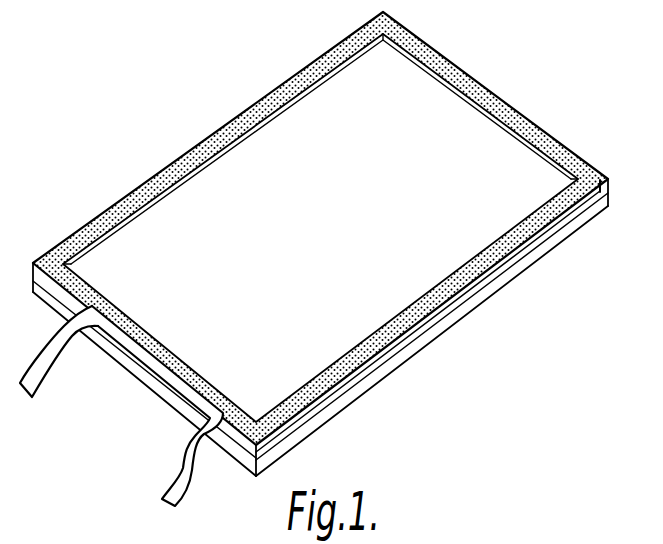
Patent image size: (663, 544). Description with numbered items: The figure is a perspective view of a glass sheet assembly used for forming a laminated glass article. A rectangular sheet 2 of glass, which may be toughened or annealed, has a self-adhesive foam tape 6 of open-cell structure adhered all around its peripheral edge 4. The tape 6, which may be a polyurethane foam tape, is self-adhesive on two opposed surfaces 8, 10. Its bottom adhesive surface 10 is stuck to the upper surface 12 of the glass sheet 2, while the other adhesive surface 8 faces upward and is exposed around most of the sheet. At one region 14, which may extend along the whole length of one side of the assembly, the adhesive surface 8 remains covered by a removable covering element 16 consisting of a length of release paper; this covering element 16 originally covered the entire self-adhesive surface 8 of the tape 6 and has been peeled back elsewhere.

The sheet of glass 2 is at (580, 221).
The peripheral edge 4 is at (443, 315).
The self-adhesive foam tape 6 is at (493, 270).
The adhesive surface 8 is at (330, 378).
The bottom adhesive surface 10 is at (315, 418).
The upper surface 12 is at (512, 162).
The region 14 is at (193, 376).
The removable covering element 16 is at (52, 354).